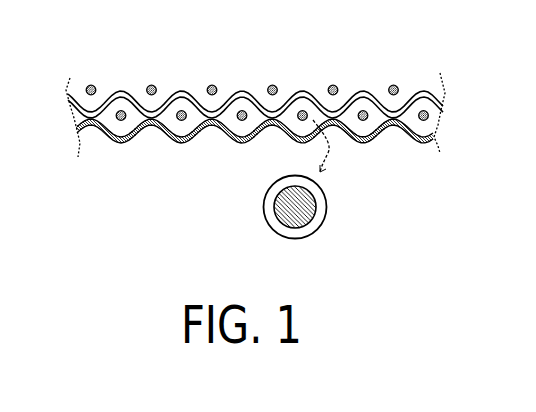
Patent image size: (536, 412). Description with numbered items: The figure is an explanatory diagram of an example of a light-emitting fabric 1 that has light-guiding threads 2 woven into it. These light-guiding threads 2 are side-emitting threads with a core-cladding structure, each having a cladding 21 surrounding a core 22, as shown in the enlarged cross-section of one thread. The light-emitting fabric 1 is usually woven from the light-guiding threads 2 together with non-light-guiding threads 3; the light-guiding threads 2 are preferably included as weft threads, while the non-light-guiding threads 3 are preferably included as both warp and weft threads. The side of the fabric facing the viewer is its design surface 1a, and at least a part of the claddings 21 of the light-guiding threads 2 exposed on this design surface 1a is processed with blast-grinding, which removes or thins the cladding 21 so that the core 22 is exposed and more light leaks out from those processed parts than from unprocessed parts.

The light-emitting fabric 1 is at (244, 103).
The design surface 1a is at (87, 80).
The light-guiding threads 2 is at (191, 88).
The non-light-guiding threads 3 is at (153, 85).
The cladding 21 is at (326, 199).
The core 22 is at (317, 217).